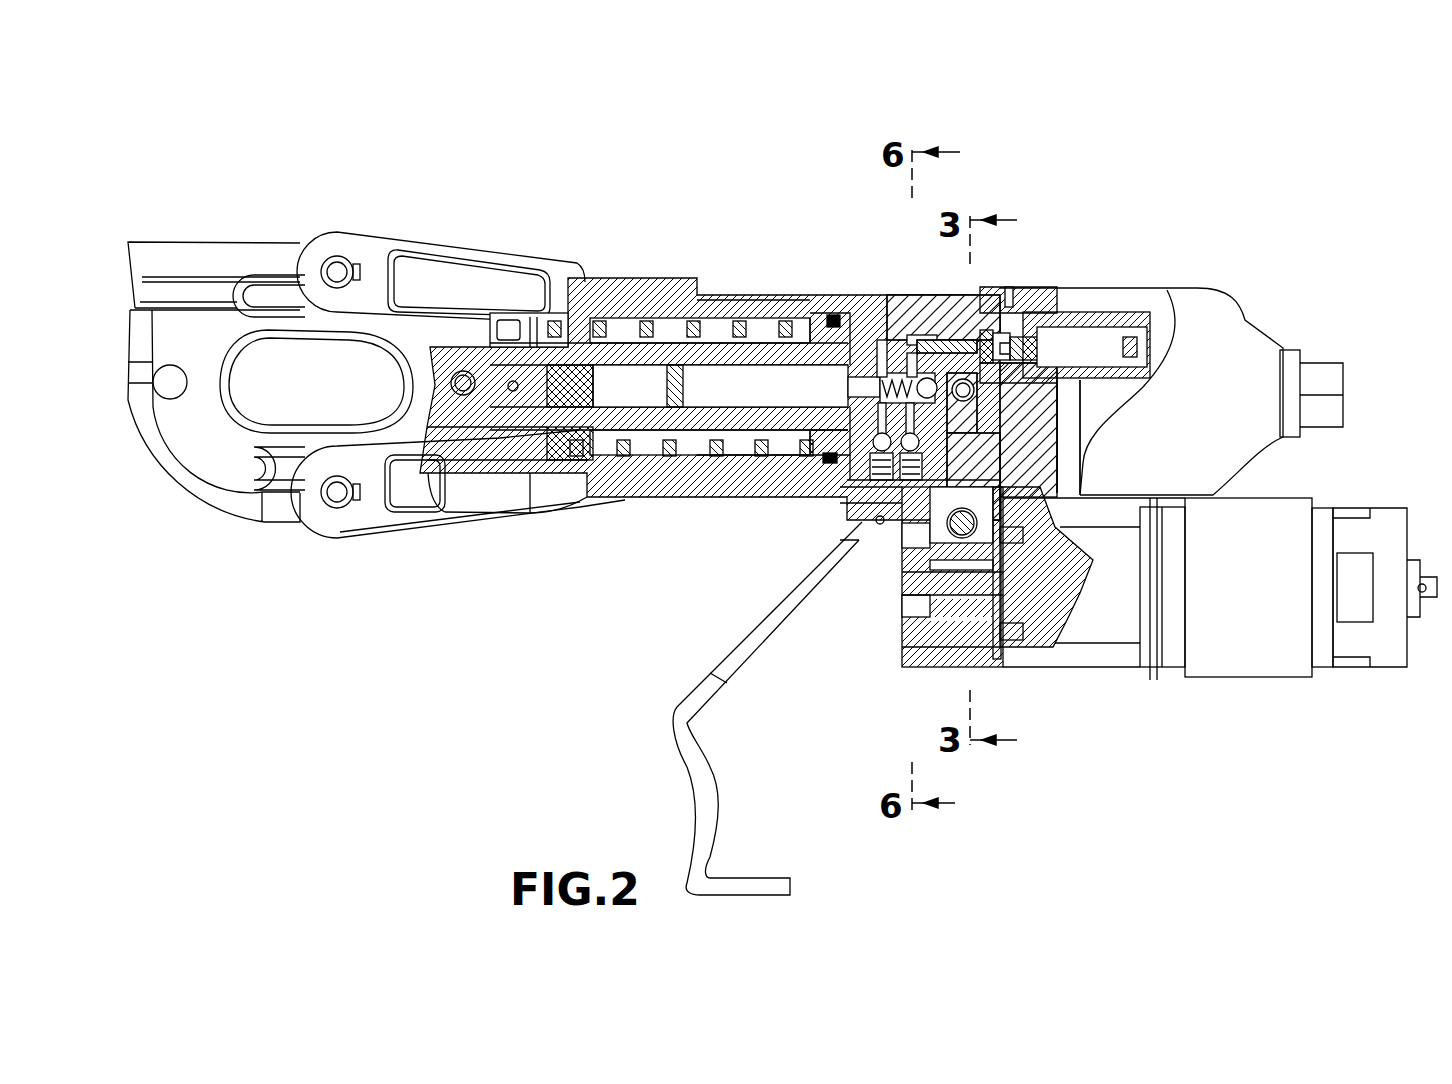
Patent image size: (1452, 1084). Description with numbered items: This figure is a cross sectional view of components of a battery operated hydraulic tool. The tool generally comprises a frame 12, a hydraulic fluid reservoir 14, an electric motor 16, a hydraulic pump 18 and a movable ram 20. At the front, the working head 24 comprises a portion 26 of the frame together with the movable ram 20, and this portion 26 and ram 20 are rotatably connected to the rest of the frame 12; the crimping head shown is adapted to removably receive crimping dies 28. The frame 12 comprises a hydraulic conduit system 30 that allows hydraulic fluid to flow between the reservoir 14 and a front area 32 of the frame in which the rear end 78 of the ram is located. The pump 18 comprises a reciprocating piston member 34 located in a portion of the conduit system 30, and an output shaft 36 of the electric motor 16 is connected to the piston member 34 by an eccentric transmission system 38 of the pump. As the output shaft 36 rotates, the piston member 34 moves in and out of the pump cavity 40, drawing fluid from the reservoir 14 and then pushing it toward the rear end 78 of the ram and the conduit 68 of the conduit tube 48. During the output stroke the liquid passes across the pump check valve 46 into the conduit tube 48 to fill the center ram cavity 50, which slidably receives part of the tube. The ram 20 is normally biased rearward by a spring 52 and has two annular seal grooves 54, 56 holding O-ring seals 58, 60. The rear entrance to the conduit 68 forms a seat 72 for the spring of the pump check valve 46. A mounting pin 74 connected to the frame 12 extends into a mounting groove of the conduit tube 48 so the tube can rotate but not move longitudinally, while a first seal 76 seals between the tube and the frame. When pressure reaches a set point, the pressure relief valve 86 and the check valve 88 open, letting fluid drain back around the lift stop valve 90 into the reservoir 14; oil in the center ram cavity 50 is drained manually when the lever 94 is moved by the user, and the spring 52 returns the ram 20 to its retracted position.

The frame 12 is at (993, 297).
The hydraulic fluid reservoir 14 is at (1213, 288).
The electric motor 16 is at (1228, 678).
The hydraulic pump 18 is at (900, 513).
The movable ram 20 is at (720, 325).
The working head 24 is at (348, 231).
The portion of the frame 26 is at (367, 543).
The crimping dies 28 is at (217, 453).
The hydraulic conduit system 30 is at (903, 338).
The front area 32 is at (770, 323).
The reciprocating piston member 34 is at (1080, 577).
The output shaft 36 is at (910, 588).
The eccentric transmission system 38 is at (965, 535).
The pump cavity 40 is at (980, 407).
The pump check valve 46 is at (1027, 315).
The conduit tube 48 is at (607, 393).
The center ram cavity 50 is at (535, 468).
The spring 52 is at (647, 320).
The annular seal groove 54 is at (813, 437).
The annular seal groove 56 is at (830, 318).
The O-ring seal 58 is at (793, 435).
The O-ring seal 60 is at (843, 377).
The conduit 68 is at (740, 390).
The seat 72 is at (877, 350).
The mounting pin 74 is at (980, 430).
The first seal 76 is at (870, 345).
The rear end of the ram 78 is at (852, 470).
The pressure relief valve 86 is at (1065, 343).
The check valve 88 is at (922, 330).
The lift stop valve 90 is at (1030, 382).
The lever 94 is at (675, 718).